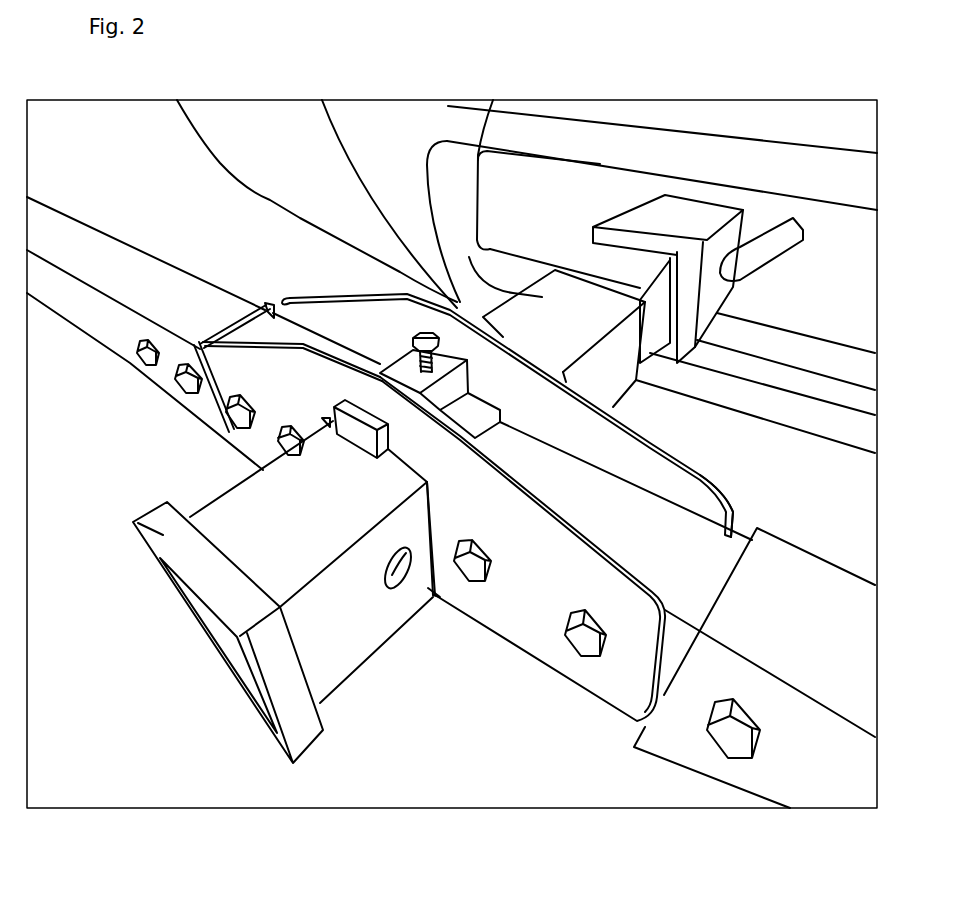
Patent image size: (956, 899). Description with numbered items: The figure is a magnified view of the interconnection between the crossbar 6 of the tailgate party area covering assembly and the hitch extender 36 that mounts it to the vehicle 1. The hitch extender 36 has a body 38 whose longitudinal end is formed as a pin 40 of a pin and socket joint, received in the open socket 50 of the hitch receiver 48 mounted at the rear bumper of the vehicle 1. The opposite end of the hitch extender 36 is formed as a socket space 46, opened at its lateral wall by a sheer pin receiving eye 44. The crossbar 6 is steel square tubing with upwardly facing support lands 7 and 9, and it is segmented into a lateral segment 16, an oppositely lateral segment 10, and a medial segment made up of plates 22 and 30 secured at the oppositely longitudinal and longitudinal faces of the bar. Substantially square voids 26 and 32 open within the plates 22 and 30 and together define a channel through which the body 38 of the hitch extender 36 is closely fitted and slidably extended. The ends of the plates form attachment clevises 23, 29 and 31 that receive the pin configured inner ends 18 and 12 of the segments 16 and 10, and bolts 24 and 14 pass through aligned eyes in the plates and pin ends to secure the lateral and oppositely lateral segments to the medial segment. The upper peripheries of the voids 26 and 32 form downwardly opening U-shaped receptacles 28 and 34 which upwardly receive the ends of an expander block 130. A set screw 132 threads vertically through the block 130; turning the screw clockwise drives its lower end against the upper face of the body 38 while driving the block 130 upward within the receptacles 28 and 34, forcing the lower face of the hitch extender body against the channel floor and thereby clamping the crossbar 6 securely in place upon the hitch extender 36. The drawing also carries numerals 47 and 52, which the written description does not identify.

The vehicle 1 is at (300, 163).
The crossbar 6 is at (173, 272).
The support land 7 is at (87, 250).
The support land 9 is at (768, 567).
The oppositely lateral segment 10 is at (100, 325).
The pin configured inner end 12 is at (268, 312).
The bolt 14 is at (225, 415).
The lateral segment 16 is at (760, 775).
The pin configured inner end 18 is at (662, 547).
The plate 22 is at (312, 342).
The clevis 23 is at (503, 638).
The bolt 24 is at (590, 647).
The oppositely longitudinal void 26 is at (437, 630).
The U shaped receptacle 28 is at (360, 405).
The clevis 29 is at (638, 432).
The plate 30 is at (425, 165).
The clevis 31 is at (326, 340).
The longitudinal void 32 is at (490, 407).
The U shaped receptacle 34 is at (480, 320).
The hitch extender 36 is at (332, 635).
The body 38 is at (458, 300).
The pin half 40 is at (587, 260).
The sheer pin receiving eye 44 is at (140, 516).
The socket space 46 is at (240, 668).
The bar hole 47 is at (395, 563).
The hitch receiver 48 is at (648, 232).
The open socket 50 is at (590, 263).
The hose 52 is at (778, 240).
The expander block 130 is at (328, 417).
The set screw 132 is at (423, 333).